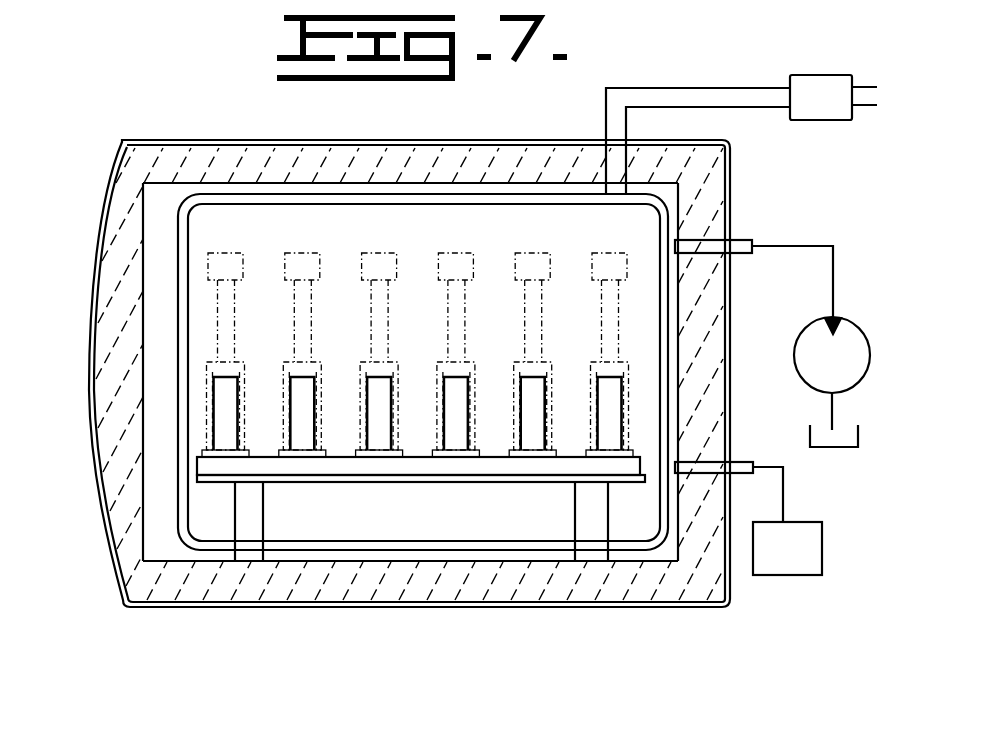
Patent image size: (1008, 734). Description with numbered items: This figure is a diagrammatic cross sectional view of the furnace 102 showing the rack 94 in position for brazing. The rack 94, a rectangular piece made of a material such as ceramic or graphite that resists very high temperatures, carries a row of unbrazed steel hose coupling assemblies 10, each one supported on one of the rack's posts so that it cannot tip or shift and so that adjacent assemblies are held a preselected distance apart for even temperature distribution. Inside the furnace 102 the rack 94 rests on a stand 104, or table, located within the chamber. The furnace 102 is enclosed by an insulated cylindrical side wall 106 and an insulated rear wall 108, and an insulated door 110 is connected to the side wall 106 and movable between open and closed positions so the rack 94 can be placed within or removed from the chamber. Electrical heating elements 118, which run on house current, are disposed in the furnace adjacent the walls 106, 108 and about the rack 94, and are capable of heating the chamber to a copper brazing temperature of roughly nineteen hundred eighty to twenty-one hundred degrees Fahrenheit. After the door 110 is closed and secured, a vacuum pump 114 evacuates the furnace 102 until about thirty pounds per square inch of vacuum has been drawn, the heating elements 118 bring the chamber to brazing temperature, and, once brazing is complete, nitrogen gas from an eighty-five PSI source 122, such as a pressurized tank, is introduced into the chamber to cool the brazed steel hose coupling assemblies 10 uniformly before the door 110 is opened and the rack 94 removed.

The steel hose coupling assembly 10 is at (266, 262).
The rack 94 is at (207, 467).
The furnace 102 is at (400, 145).
The stand 104 is at (228, 511).
The insulated cylindrical side wall 106 is at (390, 585).
The insulated rear wall 108 is at (720, 192).
The insulated door 110 is at (92, 253).
The vacuum pump 114 is at (851, 310).
The electrical heating elements 118 is at (320, 196).
The nitrogen gas source 122 is at (830, 534).